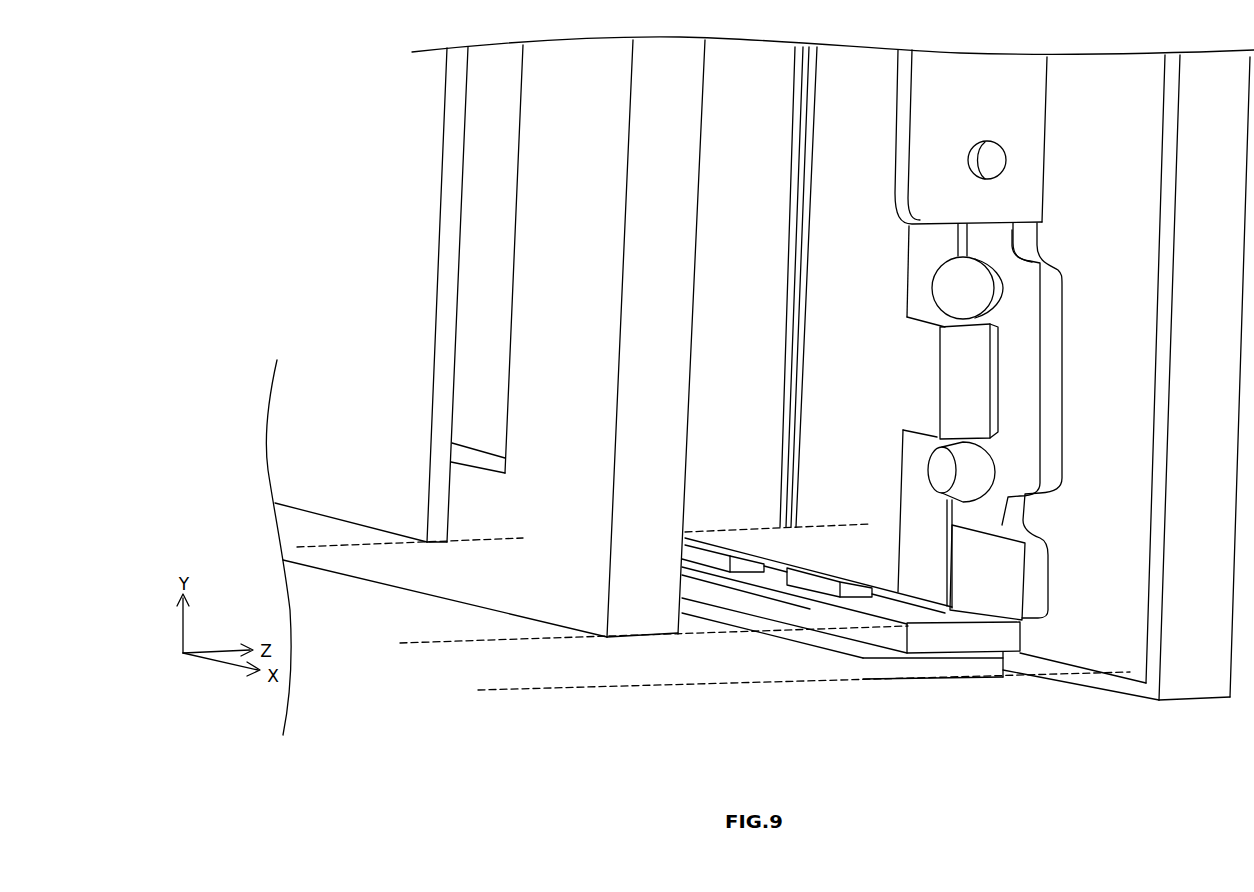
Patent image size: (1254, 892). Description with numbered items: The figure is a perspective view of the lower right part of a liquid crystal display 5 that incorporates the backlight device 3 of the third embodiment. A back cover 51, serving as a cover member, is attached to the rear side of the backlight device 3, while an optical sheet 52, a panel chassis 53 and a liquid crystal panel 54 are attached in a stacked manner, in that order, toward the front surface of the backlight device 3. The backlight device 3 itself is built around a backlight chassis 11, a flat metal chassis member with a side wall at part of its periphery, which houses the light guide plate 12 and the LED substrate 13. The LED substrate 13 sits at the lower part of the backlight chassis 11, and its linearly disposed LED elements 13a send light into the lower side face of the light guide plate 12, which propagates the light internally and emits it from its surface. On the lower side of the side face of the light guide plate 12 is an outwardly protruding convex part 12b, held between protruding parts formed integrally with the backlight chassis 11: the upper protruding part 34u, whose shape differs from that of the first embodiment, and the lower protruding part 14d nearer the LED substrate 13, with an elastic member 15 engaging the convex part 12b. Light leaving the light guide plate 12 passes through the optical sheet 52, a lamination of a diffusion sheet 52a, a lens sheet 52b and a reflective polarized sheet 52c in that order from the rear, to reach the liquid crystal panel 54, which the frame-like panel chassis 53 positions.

The liquid crystal display 5 is at (218, 116).
The backlight device 3 is at (880, 702).
The backlight chassis 11 is at (1030, 143).
The light guide plate 12 is at (928, 553).
The convex part 12b is at (975, 400).
The LED substrate 13 is at (982, 642).
The LED element 13a is at (695, 555).
The protruding part 14d is at (980, 475).
The elastic member 15 is at (973, 292).
The protruding part 34u is at (993, 262).
The back cover 51 is at (1172, 690).
The optical sheet 52 is at (849, 287).
The diffusion sheet 52a is at (806, 327).
The lens sheet 52b is at (795, 352).
The reflective polarized sheet 52c is at (787, 378).
The panel chassis 53 is at (623, 617).
The liquid crystal panel 54 is at (440, 383).